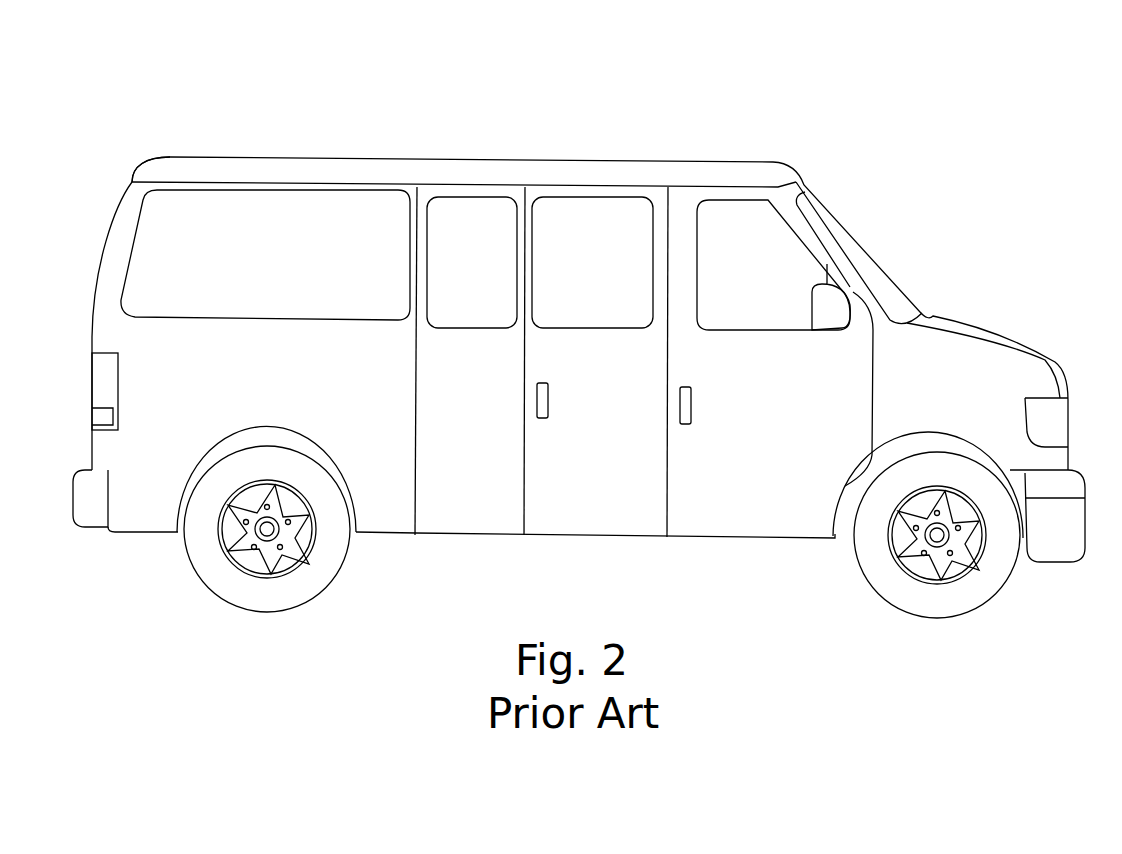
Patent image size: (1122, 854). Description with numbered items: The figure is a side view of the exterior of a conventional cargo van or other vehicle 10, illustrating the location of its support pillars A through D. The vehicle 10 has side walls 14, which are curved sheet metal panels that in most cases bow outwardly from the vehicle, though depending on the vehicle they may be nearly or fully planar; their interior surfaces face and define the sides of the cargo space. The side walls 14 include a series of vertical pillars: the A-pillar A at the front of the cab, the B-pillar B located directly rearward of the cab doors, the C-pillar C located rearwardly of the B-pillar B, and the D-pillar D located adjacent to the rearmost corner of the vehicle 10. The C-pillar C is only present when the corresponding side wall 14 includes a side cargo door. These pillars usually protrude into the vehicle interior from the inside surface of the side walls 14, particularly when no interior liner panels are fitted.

The vehicle 10 is at (534, 134).
The side walls 14 is at (258, 402).
The A-pillar A is at (838, 243).
The B-pillar B is at (678, 190).
The C-pillar C is at (421, 163).
The D-pillar D is at (134, 170).